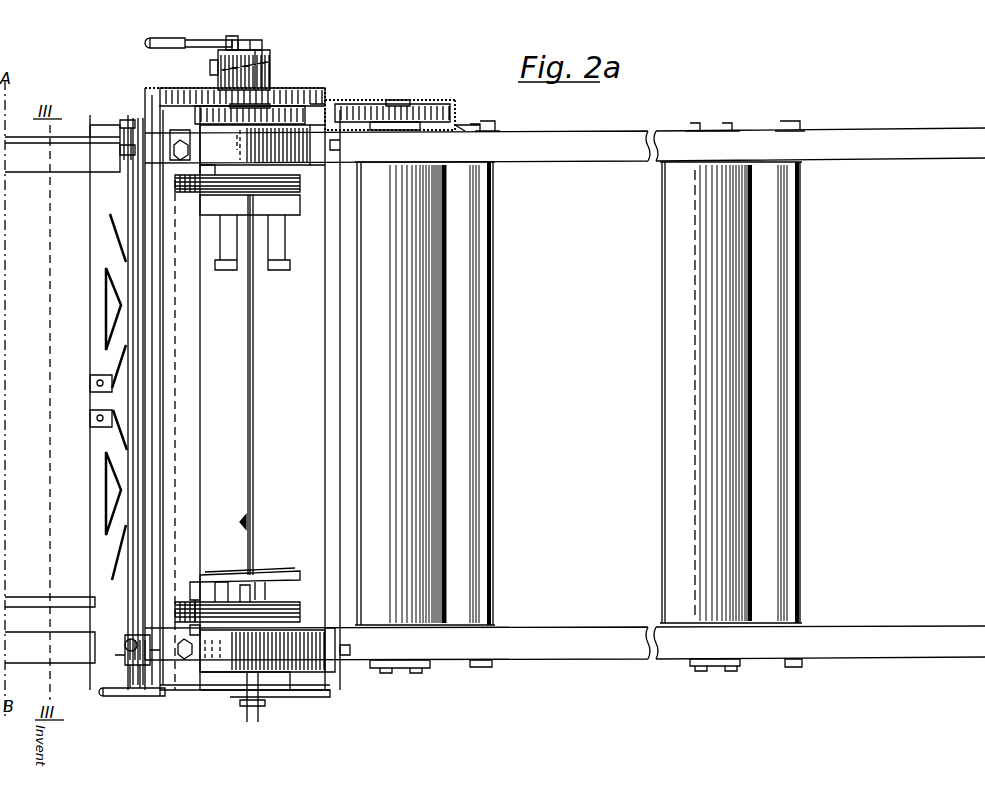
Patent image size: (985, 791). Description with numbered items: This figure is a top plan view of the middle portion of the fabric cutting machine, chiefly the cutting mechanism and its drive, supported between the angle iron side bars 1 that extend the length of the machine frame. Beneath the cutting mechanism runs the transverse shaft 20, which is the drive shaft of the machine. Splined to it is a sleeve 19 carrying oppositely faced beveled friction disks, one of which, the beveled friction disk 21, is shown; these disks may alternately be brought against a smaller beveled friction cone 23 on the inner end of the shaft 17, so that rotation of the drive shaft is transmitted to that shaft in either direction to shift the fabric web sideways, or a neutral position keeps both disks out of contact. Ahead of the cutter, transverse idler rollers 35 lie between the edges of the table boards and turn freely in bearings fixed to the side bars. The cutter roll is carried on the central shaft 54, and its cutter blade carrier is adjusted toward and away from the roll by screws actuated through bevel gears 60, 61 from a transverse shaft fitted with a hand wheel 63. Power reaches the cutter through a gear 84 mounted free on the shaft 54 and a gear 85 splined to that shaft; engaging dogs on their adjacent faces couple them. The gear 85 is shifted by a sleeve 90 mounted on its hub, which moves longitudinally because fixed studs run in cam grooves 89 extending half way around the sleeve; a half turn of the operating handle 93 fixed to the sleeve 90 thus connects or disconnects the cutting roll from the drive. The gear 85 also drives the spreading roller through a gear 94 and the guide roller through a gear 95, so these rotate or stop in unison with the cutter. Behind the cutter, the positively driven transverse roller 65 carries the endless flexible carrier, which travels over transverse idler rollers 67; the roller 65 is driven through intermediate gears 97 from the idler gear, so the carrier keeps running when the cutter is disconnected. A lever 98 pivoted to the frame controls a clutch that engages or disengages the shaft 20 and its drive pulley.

The angle iron side bars 1 is at (918, 150).
The shaft 17 is at (30, 600).
The sleeve 19 is at (258, 582).
The transverse shaft 20 is at (246, 535).
The beveled friction disk 21 is at (283, 571).
The beveled friction cone 23 is at (195, 582).
The transverse idler rollers 35 is at (145, 432).
The central shaft 54 is at (255, 197).
The bevel gear 60 is at (130, 640).
The bevel gear 61 is at (125, 655).
The hand wheel 63 is at (126, 696).
The transverse roller 65 is at (427, 305).
The transverse idler rollers 67 is at (668, 330).
The gear 84 is at (322, 152).
The splined gear 85 is at (268, 92).
The cam grooves 89 is at (228, 45).
The sleeve 90 is at (263, 55).
The operating handle 93 is at (158, 38).
The gear 94 is at (165, 92).
The gear 95 is at (320, 90).
The intermediate gears 97 is at (342, 104).
The lever 98 is at (252, 722).